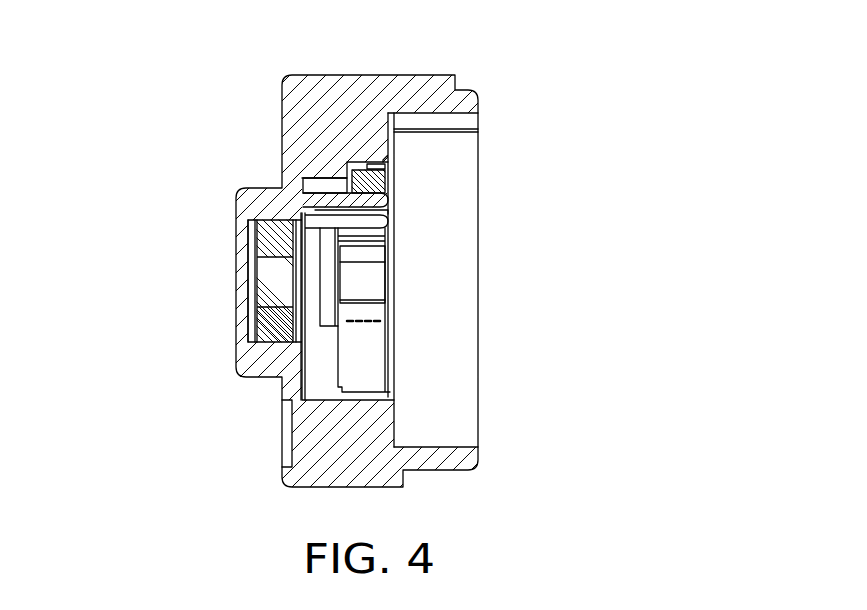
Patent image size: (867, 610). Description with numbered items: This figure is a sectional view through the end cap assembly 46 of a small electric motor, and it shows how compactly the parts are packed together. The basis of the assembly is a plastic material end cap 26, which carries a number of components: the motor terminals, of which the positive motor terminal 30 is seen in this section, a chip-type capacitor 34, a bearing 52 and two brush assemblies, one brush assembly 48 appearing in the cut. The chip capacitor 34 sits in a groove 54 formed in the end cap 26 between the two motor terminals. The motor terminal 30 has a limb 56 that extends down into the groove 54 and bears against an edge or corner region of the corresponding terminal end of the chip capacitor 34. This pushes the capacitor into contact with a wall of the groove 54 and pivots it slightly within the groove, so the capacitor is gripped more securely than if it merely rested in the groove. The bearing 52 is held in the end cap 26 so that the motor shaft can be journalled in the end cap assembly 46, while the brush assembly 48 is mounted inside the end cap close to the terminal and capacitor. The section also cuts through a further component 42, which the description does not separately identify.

The end cap 26 is at (297, 113).
The positive motor terminal 30 is at (391, 198).
The chip-type capacitor 34 is at (388, 186).
The chamber 42 is at (370, 278).
The end cap assembly 46 is at (662, 117).
The brush assembly 48 is at (365, 342).
The bearing 52 is at (277, 238).
The groove 54 is at (313, 187).
The limb 56 is at (392, 167).